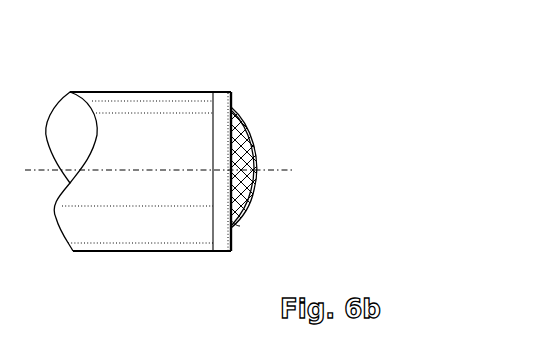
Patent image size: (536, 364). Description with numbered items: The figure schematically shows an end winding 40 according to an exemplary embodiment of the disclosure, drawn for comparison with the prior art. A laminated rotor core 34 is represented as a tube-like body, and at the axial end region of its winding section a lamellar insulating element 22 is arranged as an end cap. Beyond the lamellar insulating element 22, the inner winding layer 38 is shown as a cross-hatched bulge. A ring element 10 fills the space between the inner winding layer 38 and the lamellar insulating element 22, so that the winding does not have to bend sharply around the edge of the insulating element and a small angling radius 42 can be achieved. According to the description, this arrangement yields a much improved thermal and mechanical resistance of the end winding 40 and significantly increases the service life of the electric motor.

The ring element 10 is at (241, 141).
The lamellar insulating element 22 is at (221, 106).
The laminated rotor core 34 is at (137, 105).
The inner winding layer 38 is at (236, 148).
The end winding 40 is at (323, 75).
The angling radius 42 is at (235, 221).